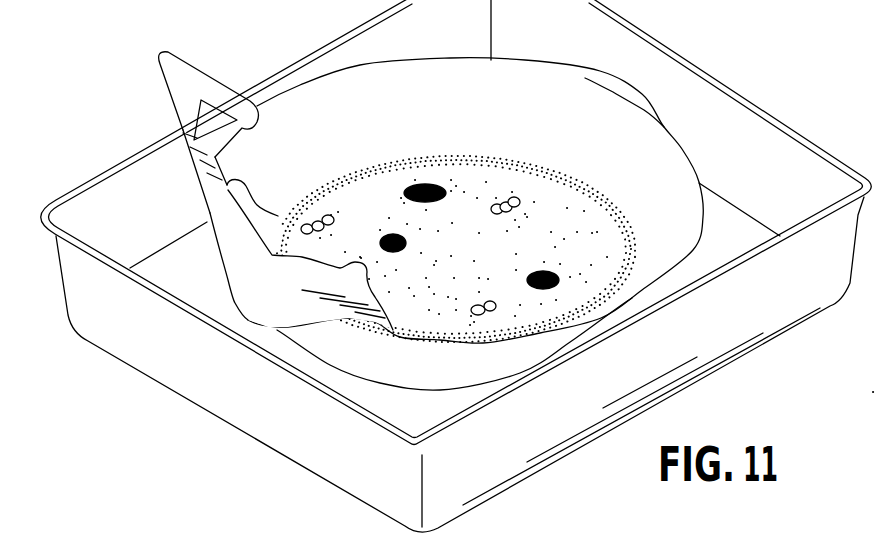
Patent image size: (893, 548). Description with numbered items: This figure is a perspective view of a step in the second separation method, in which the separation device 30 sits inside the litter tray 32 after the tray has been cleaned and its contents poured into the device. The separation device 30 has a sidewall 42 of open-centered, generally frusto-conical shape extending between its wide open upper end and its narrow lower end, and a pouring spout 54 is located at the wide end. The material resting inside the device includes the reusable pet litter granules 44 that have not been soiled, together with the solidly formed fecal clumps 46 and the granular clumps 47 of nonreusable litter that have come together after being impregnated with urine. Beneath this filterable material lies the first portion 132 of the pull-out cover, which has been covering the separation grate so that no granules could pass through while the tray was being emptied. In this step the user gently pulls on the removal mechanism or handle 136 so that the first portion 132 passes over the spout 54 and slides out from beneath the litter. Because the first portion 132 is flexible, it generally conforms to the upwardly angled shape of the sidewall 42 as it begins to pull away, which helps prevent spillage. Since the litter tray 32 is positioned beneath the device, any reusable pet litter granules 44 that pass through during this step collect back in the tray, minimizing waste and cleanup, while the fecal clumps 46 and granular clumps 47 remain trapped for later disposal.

The separation device 30 is at (525, 59).
The litter tray 32 is at (727, 86).
The sidewall 42 is at (420, 386).
The reusable pet litter granules 44 is at (613, 227).
The fecal clumps 46 is at (508, 202).
The granular clumps 47 is at (427, 185).
The spout 54 is at (233, 308).
The first portion 132 is at (283, 307).
The removal mechanism or handle 136 is at (220, 72).